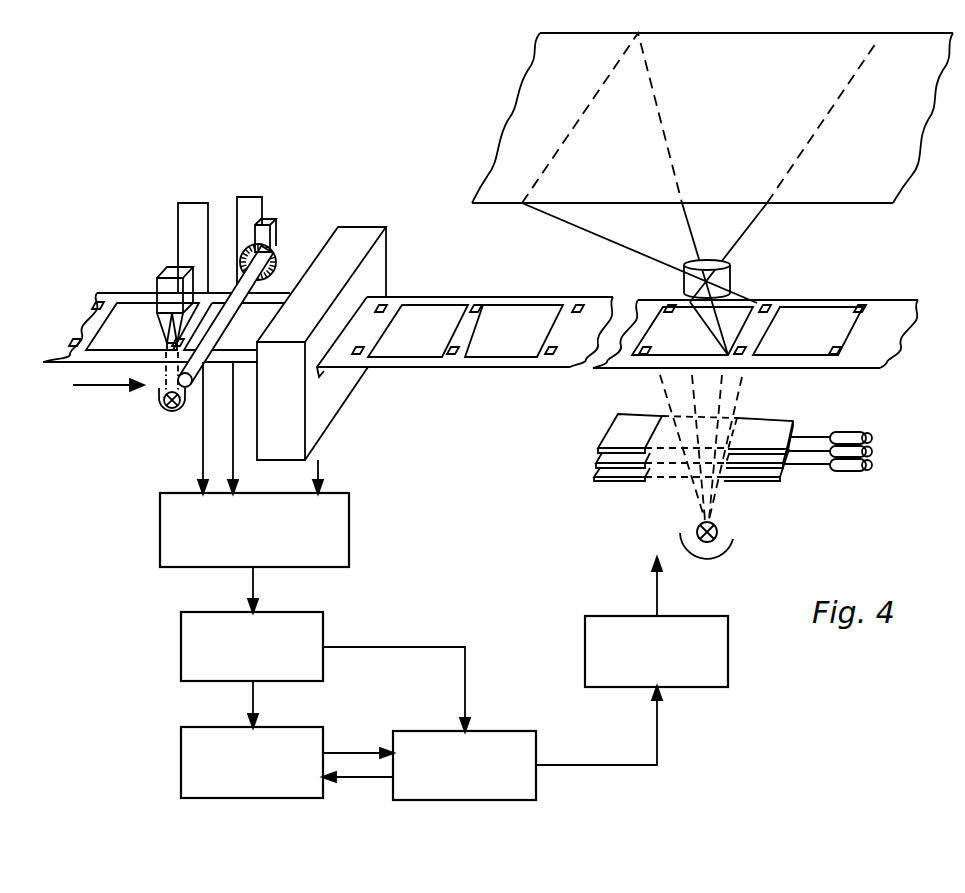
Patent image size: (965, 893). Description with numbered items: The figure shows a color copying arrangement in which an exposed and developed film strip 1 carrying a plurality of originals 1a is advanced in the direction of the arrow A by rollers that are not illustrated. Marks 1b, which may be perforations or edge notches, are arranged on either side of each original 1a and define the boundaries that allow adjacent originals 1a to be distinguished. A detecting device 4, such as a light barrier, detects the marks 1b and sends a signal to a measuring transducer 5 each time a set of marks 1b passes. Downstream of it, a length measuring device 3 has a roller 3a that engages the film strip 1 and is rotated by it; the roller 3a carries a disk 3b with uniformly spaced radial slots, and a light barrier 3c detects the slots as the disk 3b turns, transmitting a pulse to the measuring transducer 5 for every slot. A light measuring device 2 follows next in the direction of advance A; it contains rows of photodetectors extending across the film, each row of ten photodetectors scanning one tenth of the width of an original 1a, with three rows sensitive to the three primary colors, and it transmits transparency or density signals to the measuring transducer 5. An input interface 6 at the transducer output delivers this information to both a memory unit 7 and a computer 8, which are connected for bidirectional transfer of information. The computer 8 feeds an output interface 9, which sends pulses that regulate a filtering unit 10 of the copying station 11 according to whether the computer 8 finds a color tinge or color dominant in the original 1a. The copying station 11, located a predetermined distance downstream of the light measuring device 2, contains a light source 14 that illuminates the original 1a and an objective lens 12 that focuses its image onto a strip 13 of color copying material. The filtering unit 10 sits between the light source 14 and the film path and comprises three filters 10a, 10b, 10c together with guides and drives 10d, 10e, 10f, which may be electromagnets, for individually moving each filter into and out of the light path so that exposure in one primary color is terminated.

The film strip 1 is at (118, 292).
The original 1a is at (427, 313).
The marks 1b is at (482, 308).
The light measuring device 2 is at (357, 232).
The length measuring device 3 is at (283, 242).
The roller 3a is at (216, 336).
The disk 3b is at (278, 264).
The light barrier 3c is at (277, 222).
The detecting device 4 is at (173, 270).
The measuring transducer 5 is at (349, 521).
The input interface 6 is at (181, 633).
The memory unit 7 is at (181, 762).
The computer 8 is at (502, 731).
The output interface 9 is at (728, 648).
The filtering unit 10 is at (736, 467).
The filter 10a is at (600, 440).
The filter 10b is at (597, 459).
The filter 10c is at (597, 477).
The guide and drive 10d is at (872, 434).
The guide and drive 10e is at (872, 447).
The guide and drive 10f is at (872, 462).
The copying station 11 is at (802, 296).
The objective lens 12 is at (727, 278).
The strip of color copying material 13 is at (887, 200).
The light source 14 is at (733, 541).
The direction of advance A is at (108, 397).